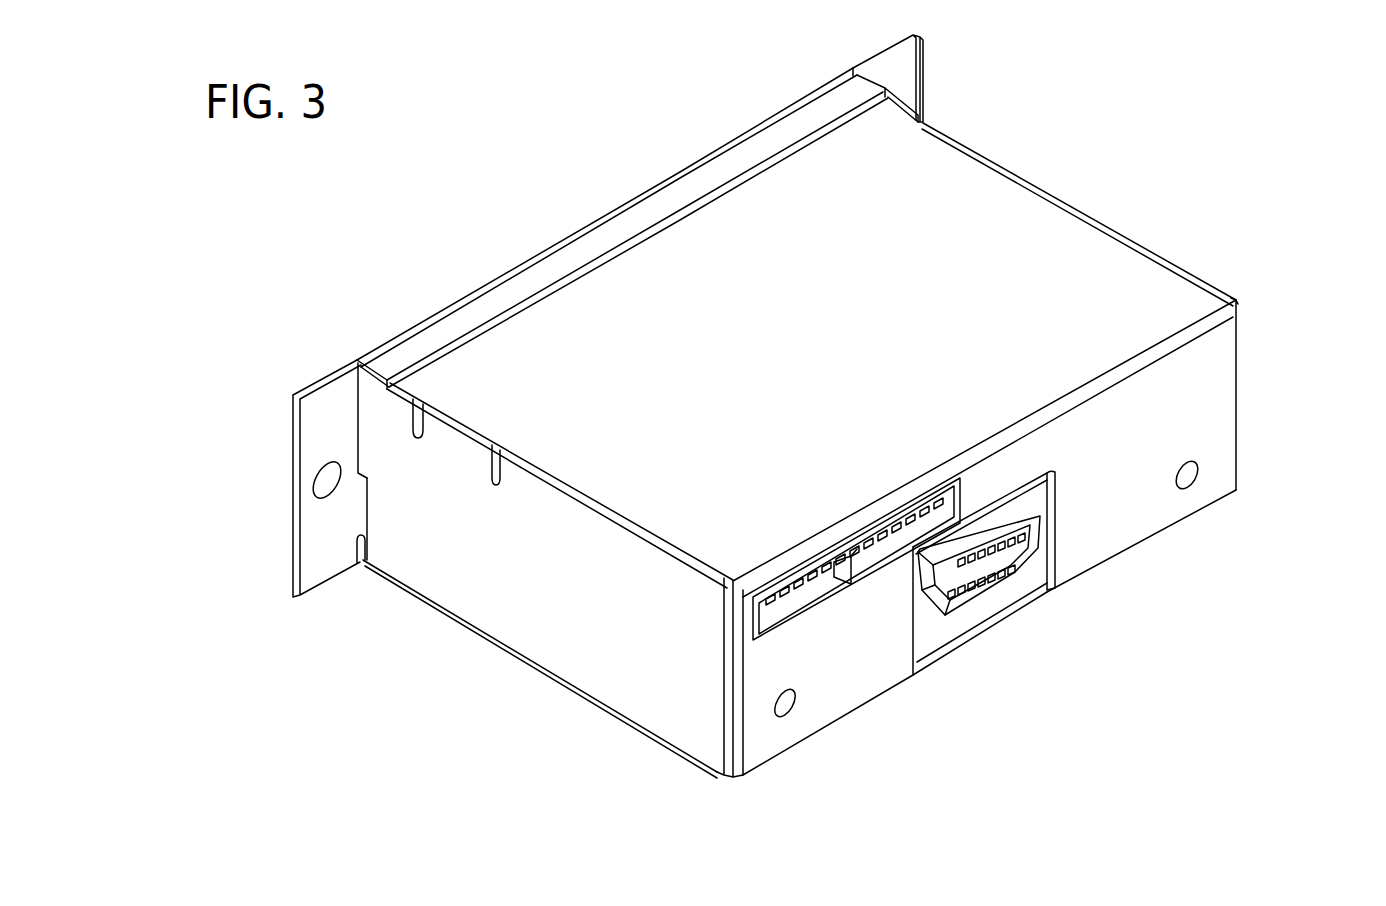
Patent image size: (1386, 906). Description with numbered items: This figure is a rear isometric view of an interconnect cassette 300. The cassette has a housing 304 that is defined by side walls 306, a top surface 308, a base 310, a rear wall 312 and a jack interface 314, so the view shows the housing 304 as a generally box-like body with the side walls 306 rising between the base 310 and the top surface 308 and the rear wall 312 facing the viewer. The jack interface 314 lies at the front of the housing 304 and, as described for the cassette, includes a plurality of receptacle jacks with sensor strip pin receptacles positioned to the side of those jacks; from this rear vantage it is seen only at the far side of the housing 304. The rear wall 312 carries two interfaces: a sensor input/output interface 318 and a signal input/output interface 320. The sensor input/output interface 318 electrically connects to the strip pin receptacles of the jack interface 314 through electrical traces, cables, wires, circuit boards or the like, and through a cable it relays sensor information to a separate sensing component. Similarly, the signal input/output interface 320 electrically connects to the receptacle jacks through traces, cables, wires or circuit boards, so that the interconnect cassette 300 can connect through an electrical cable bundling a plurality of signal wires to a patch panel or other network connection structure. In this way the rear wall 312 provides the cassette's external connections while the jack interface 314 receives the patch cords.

The interconnect cassette 300 is at (1127, 280).
The housing 304 is at (473, 587).
The side walls 306 is at (633, 632).
The top surface 308 is at (922, 273).
The base 310 is at (790, 743).
The rear wall 312 is at (1187, 370).
The jack interface 314 is at (327, 377).
The sensor input/output (I/O) interface 318 is at (807, 590).
The signal input/output (I/O) interface 320 is at (1013, 587).